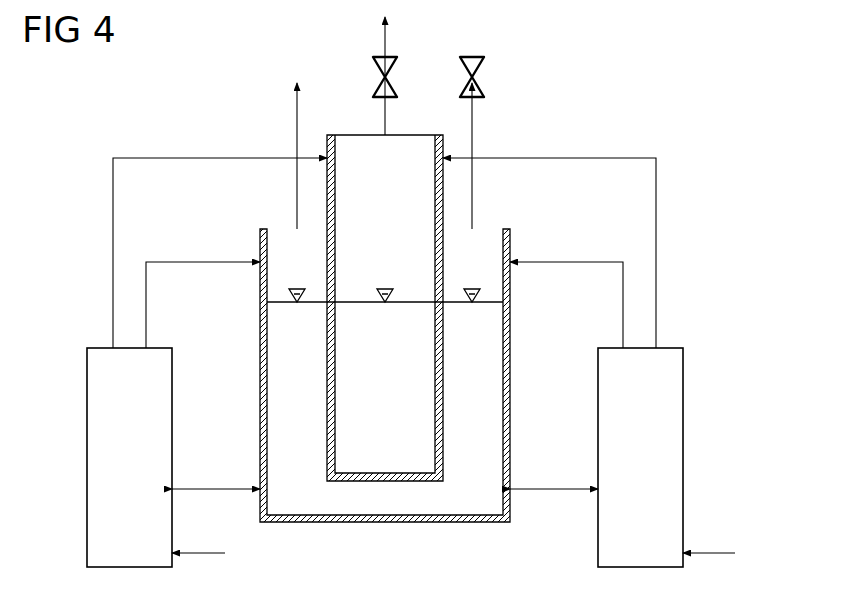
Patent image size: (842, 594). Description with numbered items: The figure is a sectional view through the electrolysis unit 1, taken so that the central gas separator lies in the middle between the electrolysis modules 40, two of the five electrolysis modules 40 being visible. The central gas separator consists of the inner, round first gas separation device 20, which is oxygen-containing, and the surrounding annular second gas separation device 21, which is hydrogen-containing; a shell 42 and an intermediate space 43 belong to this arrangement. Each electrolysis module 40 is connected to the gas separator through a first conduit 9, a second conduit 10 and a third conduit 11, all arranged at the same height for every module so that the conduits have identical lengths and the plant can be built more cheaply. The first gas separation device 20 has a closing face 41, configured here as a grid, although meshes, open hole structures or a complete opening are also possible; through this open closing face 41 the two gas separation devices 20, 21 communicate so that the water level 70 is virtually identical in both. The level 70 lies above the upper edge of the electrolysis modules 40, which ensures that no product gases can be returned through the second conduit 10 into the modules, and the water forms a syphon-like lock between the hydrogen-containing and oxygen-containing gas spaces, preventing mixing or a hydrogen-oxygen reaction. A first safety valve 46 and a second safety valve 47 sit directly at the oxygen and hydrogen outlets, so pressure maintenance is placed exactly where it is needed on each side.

The electrolysis unit 1 is at (652, 96).
The first conduit 9 is at (203, 260).
The second conduit 10 is at (219, 487).
The third conduit 11 is at (155, 157).
The first gas separation device 20 is at (423, 338).
The second gas separation device 21 is at (507, 383).
The electrolysis module 40 is at (87, 453).
The closing face 41 is at (386, 483).
The shell 42 is at (443, 430).
The intermediate space 43 is at (262, 381).
The first safety valve 46 is at (373, 77).
The second safety valve 47 is at (484, 77).
The level 70 is at (472, 288).